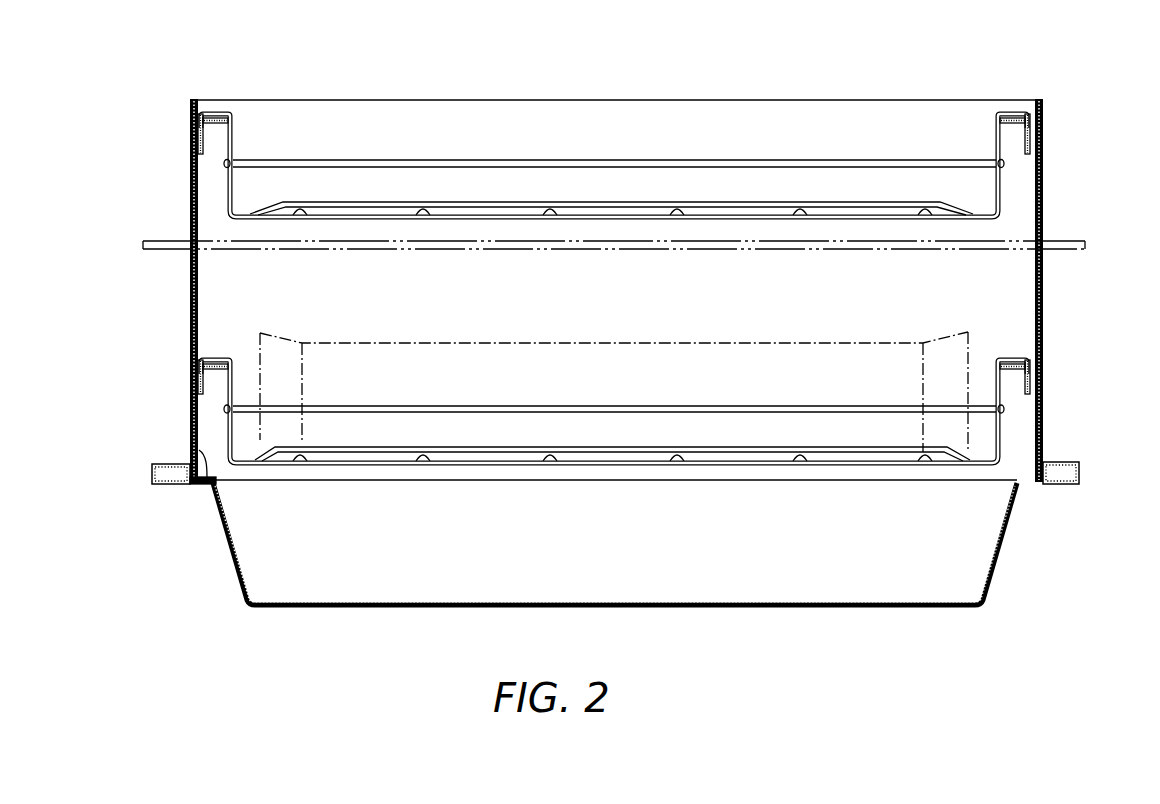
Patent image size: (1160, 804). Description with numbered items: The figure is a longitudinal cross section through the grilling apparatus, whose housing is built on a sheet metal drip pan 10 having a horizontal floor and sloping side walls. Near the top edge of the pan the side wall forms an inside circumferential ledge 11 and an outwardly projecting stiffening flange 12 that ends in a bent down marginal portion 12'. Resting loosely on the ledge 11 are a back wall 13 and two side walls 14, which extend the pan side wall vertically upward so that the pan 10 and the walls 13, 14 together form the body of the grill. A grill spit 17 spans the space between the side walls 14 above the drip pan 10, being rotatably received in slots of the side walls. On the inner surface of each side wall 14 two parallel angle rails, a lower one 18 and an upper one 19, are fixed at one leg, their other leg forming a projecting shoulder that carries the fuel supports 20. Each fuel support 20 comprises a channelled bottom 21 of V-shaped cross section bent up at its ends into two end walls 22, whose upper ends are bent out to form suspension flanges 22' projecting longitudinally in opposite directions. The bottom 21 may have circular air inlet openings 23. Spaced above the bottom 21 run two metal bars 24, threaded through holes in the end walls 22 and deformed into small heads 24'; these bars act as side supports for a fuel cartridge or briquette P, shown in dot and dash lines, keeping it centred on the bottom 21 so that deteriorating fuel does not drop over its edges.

The drip pan 10 is at (985, 548).
The inside circumferential ledge 11 is at (197, 452).
The outwardly projecting stiffening flange 12 is at (149, 464).
The bent down marginal portion 12' is at (1087, 478).
The back wall 13 is at (573, 104).
The side wall 14 is at (190, 306).
The grill spit 17 is at (1058, 250).
The lower angle rail 18 is at (210, 372).
The upper angle rail 19 is at (205, 128).
The fuel support 20 is at (713, 220).
The channelled bottom 21 is at (382, 207).
The end wall 22 is at (614, 165).
The suspension flange 22' is at (614, 95).
The air inlet openings 23 is at (424, 221).
The metal bar 24 is at (614, 266).
The head 24' is at (621, 287).
The fuel cartridge or briquette P is at (630, 353).